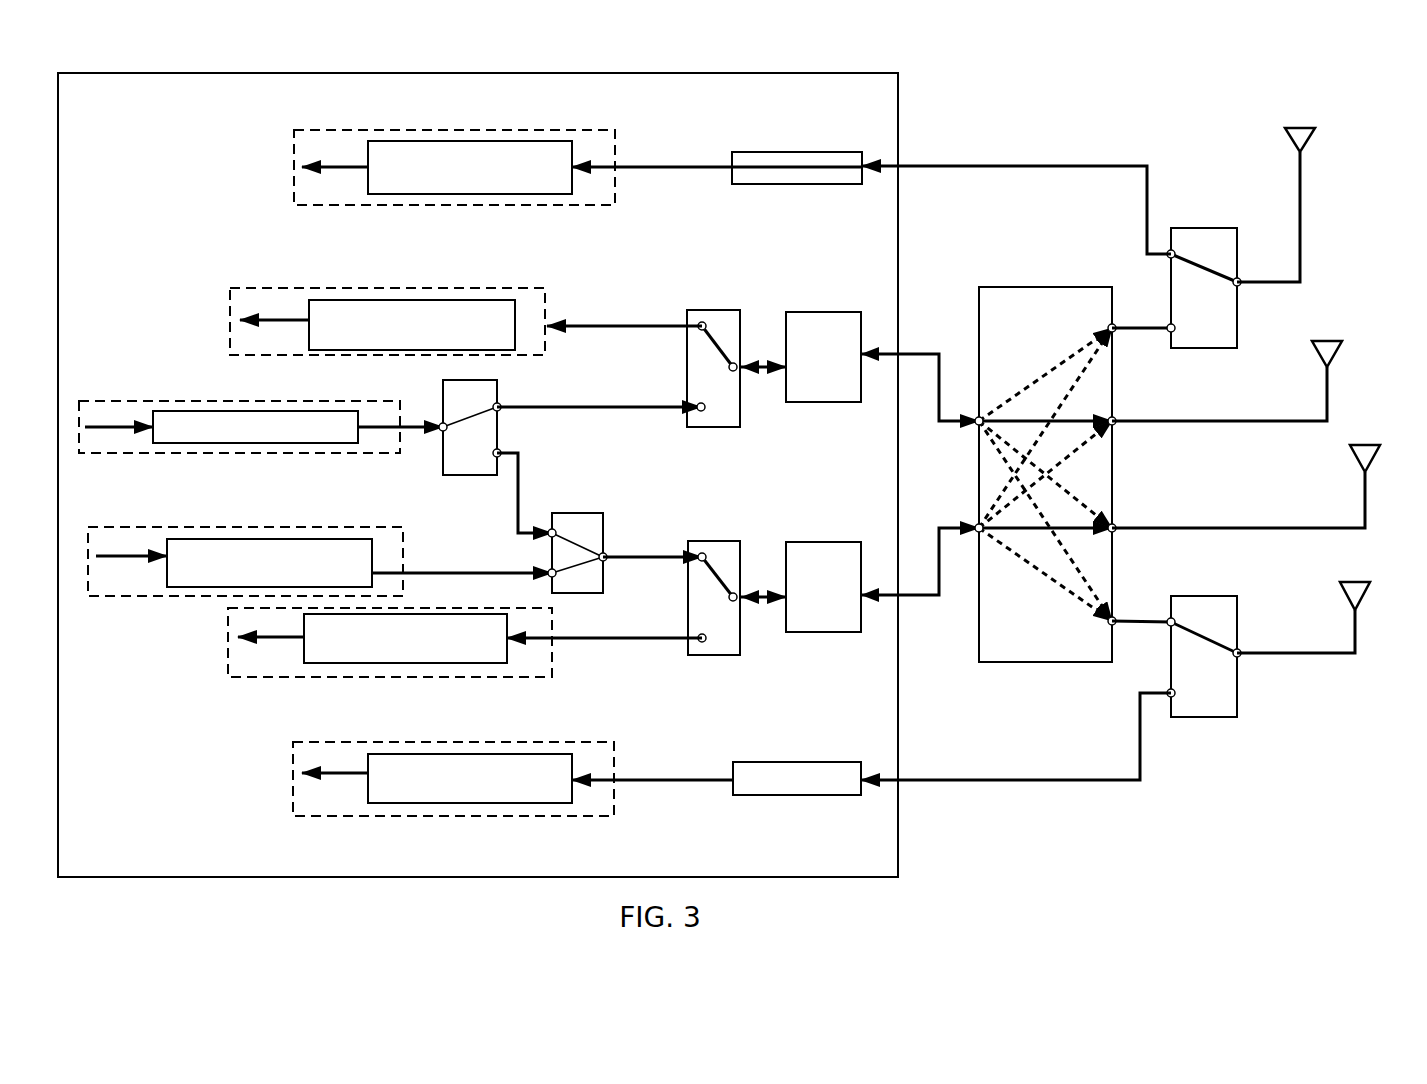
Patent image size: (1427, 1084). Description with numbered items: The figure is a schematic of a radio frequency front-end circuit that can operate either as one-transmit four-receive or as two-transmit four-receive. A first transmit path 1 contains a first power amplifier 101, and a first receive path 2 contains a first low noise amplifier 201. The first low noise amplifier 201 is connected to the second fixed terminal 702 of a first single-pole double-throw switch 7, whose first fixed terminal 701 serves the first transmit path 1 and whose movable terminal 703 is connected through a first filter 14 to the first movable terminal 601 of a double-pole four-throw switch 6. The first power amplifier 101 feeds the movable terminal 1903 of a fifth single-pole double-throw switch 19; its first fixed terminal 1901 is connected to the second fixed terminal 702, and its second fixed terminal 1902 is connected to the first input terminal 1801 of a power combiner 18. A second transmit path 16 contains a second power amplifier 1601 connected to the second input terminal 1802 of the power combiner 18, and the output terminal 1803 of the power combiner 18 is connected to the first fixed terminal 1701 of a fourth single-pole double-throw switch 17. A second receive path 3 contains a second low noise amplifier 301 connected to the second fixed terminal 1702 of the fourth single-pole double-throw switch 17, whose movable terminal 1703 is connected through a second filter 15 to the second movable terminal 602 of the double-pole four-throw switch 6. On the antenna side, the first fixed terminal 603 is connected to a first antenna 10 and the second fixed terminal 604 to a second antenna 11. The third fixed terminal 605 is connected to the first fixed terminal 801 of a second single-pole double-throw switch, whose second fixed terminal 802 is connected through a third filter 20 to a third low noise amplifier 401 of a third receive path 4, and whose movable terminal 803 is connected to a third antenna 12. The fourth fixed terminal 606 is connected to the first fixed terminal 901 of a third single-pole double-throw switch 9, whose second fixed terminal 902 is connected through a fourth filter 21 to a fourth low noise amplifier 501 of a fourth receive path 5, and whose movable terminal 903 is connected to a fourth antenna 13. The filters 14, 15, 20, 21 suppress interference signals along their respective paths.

The first transmit path 1 is at (165, 453).
The first power amplifier 101 is at (305, 444).
The first receive path 2 is at (295, 288).
The first low noise amplifier 201 is at (435, 300).
The second receive path 3 is at (315, 677).
The second low noise amplifier 301 is at (460, 664).
The third receive path 4 is at (352, 130).
The third low noise amplifier 401 is at (500, 141).
The fourth receive path 5 is at (360, 816).
The fourth low noise amplifier 501 is at (500, 803).
The double-pole four-throw switch 6 is at (1040, 287).
The first movable terminal 601 is at (976, 420).
The second movable terminal 602 is at (976, 528).
The first fixed terminal 603 is at (1118, 423).
The second fixed terminal 604 is at (1118, 530).
The third fixed terminal 605 is at (1118, 330).
The fourth fixed terminal 606 is at (1118, 624).
The first single-pole double-throw switch 7 is at (716, 310).
The first fixed terminal 701 is at (698, 323).
The second fixed terminal 702 is at (698, 408).
The movable terminal 703 is at (737, 363).
The first fixed terminal 801 is at (1168, 328).
The second fixed terminal 802 is at (1168, 250).
The movable terminal 803 is at (1241, 285).
The third single-pole double-throw switch 9 is at (1210, 717).
The first fixed terminal 901 is at (1168, 621).
The second fixed terminal 902 is at (1168, 695).
The movable terminal 903 is at (1242, 653).
The first antenna 10 is at (1342, 341).
The second antenna 11 is at (1380, 445).
The third antenna 12 is at (1315, 128).
The fourth antenna 13 is at (1370, 582).
The first filter 14 is at (818, 402).
The second filter 15 is at (818, 632).
The second transmit path 16 is at (155, 527).
The second power amplifier 1601 is at (300, 539).
The fourth single-pole double-throw switch 17 is at (745, 541).
The first fixed terminal 1701 is at (698, 553).
The second fixed terminal 1702 is at (698, 641).
The movable terminal 1703 is at (737, 592).
The power combiner 18 is at (580, 513).
The first input terminal 1801 is at (548, 531).
The second input terminal 1802 is at (548, 575).
The output terminal 1803 is at (607, 555).
The fifth single-pole double-throw switch 19 is at (462, 476).
The first fixed terminal 1901 is at (500, 405).
The second fixed terminal 1902 is at (500, 452).
The movable terminal 1903 is at (440, 425).
The third filter 20 is at (795, 152).
The fourth filter 21 is at (795, 795).